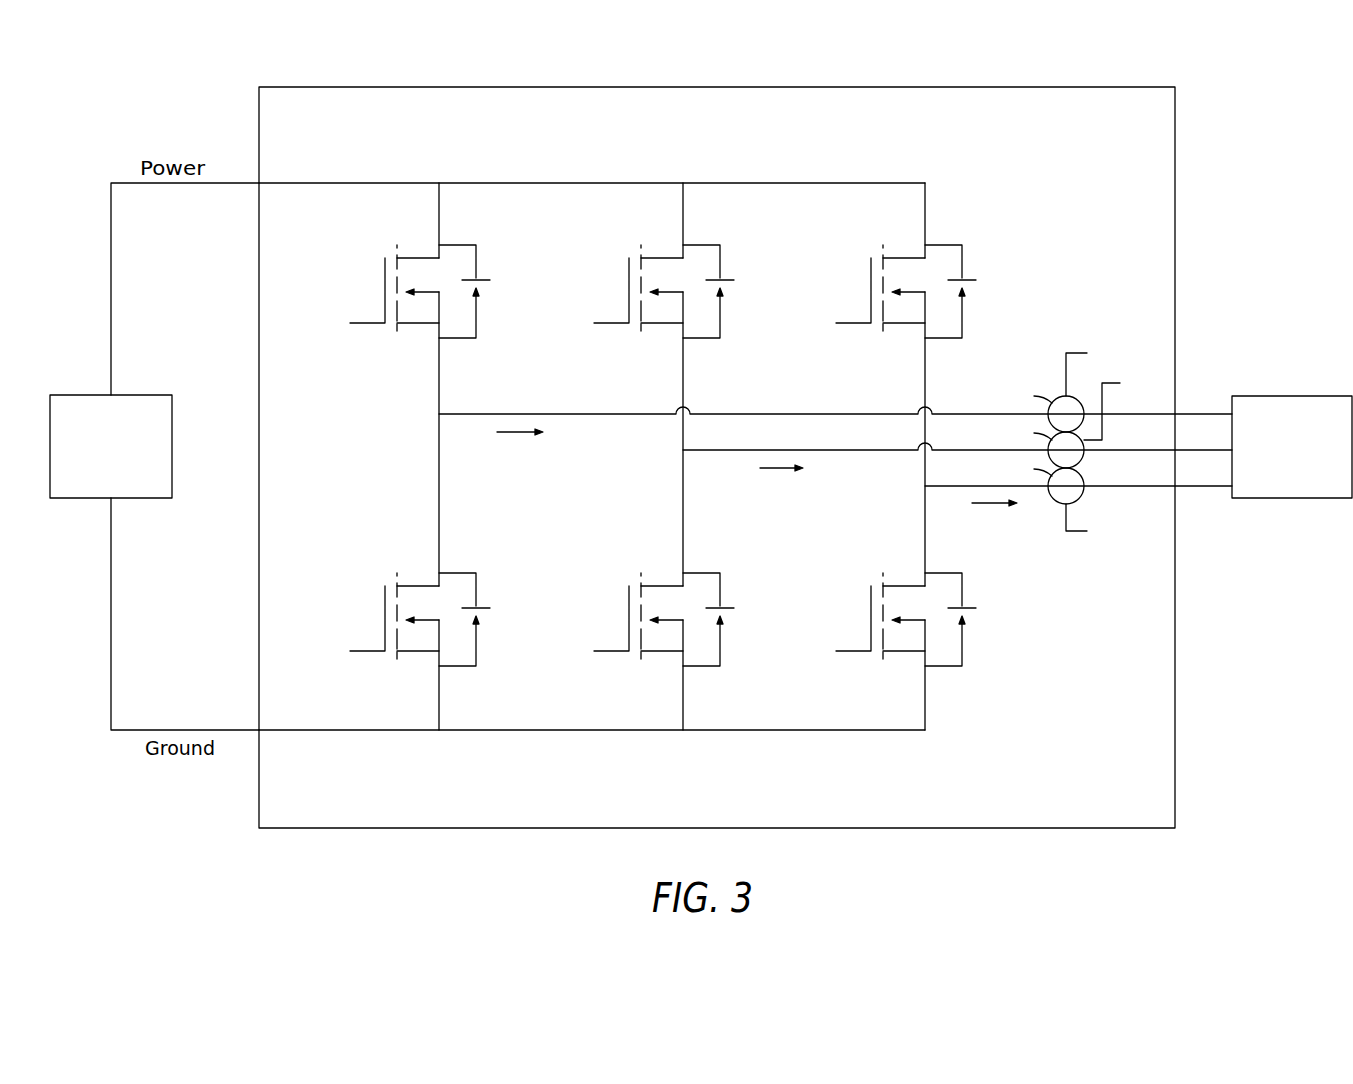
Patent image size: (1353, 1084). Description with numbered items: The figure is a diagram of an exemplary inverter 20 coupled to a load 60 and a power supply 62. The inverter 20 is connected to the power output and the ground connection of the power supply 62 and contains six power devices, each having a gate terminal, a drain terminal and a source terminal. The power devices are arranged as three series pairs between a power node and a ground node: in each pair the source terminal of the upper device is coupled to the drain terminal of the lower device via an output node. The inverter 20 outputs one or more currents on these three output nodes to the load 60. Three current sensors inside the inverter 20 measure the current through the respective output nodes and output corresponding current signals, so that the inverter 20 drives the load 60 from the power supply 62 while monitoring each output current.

The inverter 20 is at (745, 457).
The load 60 is at (1292, 447).
The power supply 62 is at (111, 446).